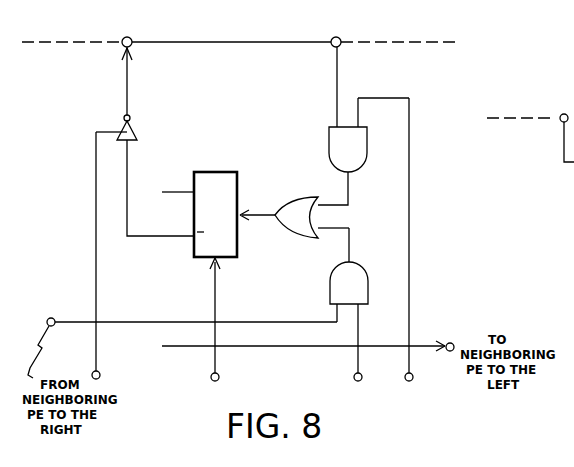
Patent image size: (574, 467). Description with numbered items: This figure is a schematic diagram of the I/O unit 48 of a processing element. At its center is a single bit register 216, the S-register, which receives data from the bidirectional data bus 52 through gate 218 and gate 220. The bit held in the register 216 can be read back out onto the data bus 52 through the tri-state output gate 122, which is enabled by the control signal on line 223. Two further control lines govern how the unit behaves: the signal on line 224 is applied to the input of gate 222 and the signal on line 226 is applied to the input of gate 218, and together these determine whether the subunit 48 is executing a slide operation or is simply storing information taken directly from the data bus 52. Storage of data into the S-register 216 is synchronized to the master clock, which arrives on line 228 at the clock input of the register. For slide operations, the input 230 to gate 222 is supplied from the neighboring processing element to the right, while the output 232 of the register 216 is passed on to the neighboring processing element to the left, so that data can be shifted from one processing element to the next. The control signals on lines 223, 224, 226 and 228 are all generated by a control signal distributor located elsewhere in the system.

The bidirectional data bus 52 is at (200, 42).
The I/O unit 48 is at (424, 100).
The tri-state output gate 122 is at (136, 132).
The single bit register 216 is at (228, 190).
The gate 218 is at (333, 144).
The gate 220 is at (295, 232).
The gate 222 is at (338, 288).
The control line 223 is at (98, 357).
The control line 224 is at (360, 343).
The control line 226 is at (410, 238).
The master clock line 228 is at (218, 308).
The input 230 is at (66, 320).
The output 232 is at (425, 346).